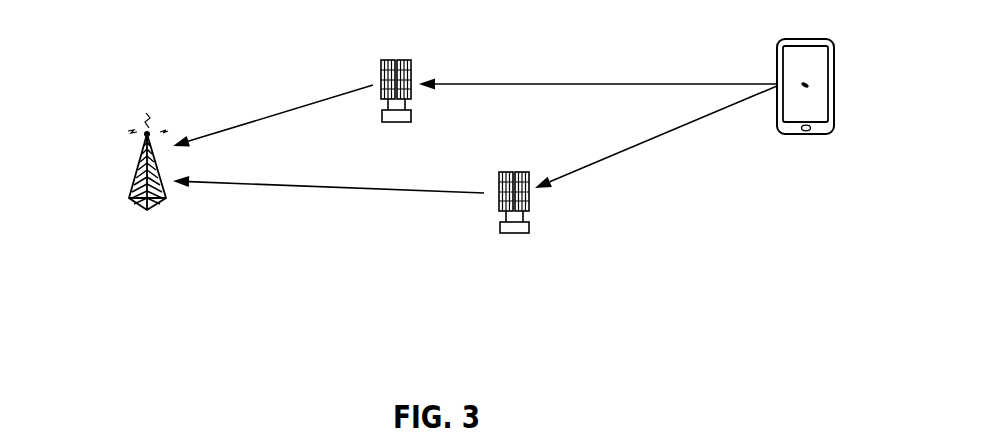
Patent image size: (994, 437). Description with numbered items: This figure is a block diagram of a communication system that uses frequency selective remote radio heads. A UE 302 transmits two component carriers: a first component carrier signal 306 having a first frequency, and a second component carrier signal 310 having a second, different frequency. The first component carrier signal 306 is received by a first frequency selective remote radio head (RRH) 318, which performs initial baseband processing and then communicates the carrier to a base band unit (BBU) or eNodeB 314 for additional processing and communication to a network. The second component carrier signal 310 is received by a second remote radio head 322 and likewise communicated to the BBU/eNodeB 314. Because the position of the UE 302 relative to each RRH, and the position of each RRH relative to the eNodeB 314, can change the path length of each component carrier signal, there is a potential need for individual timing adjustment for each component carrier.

The UE 302 is at (834, 80).
The first component carrier signal 306 is at (630, 149).
The second component carrier signal 310 is at (613, 83).
The base band unit (BBU) or eNodeB 314 is at (131, 186).
The first frequency selective remote radio head (RRH) 318 is at (499, 173).
The second remote radio head 322 is at (381, 63).